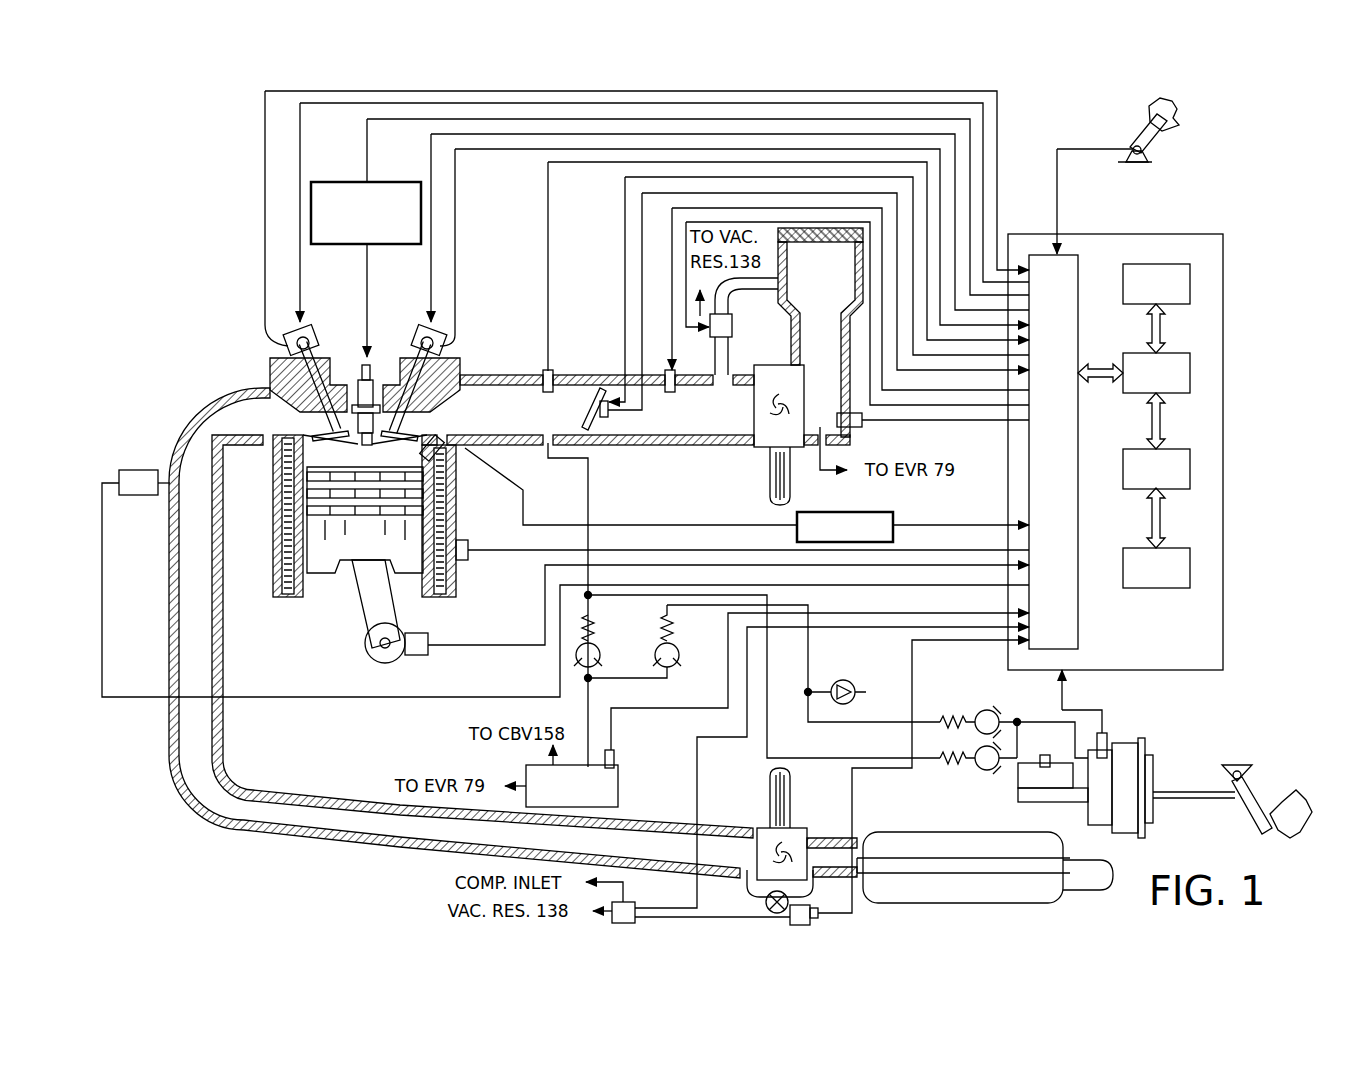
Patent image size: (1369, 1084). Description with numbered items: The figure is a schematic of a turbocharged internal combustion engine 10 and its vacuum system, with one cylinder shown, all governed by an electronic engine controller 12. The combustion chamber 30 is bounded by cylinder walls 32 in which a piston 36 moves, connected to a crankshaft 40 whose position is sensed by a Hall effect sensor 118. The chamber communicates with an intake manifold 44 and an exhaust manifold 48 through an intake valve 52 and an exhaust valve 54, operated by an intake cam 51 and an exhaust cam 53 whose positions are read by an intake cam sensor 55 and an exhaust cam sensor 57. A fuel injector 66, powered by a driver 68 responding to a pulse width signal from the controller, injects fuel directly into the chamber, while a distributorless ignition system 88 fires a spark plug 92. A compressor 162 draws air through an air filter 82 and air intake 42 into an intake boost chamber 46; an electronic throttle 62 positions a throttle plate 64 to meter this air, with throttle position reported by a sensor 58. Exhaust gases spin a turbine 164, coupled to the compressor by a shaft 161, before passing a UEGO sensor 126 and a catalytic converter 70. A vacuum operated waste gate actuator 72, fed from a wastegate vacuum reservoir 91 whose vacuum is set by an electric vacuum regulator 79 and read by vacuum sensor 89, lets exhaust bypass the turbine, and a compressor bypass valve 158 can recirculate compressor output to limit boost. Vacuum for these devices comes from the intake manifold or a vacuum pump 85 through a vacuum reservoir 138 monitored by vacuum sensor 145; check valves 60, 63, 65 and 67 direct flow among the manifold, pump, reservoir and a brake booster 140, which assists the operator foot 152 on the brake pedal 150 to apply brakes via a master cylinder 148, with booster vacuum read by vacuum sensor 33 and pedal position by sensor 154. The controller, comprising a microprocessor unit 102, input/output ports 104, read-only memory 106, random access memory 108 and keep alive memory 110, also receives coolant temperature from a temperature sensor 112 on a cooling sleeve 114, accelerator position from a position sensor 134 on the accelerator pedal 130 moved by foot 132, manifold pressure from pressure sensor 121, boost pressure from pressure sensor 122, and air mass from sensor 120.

The internal combustion engine 10 is at (206, 318).
The electronic engine controller 12 is at (1212, 236).
The combustion chamber 30 is at (362, 452).
The cylinder walls 32 is at (312, 583).
The vacuum sensor 33 is at (1107, 733).
The piston 36 is at (350, 547).
The crankshaft 40 is at (372, 664).
The air intake 42 is at (812, 339).
The intake manifold 44 is at (495, 421).
The intake boost chamber 46 is at (673, 421).
The exhaust manifold 48 is at (228, 427).
The intake cam 51 is at (425, 330).
The intake valve 52 is at (402, 424).
The exhaust cam 53 is at (305, 330).
The exhaust valve 54 is at (272, 392).
The intake cam sensor 55 is at (436, 344).
The exhaust cam sensor 57 is at (292, 344).
The throttle position sensor 58 is at (612, 415).
The check valve 60 is at (598, 648).
The electronic throttle 62 is at (592, 386).
The check valve 63 is at (681, 654).
The throttle plate 64 is at (600, 382).
The check valve 65 is at (996, 712).
The fuel injector 66 is at (440, 440).
The check valve 67 is at (976, 744).
The driver 68 is at (893, 535).
The catalytic converter 70 is at (895, 830).
The waste gate actuator 72 is at (766, 910).
The electric vacuum regulator 79 is at (633, 903).
The air filter 82 is at (843, 246).
The vacuum pump 85 is at (855, 683).
The distributorless ignition system 88 is at (326, 182).
The vacuum sensor 89 is at (812, 912).
The wastegate vacuum reservoir 91 is at (852, 926).
The spark plug 92 is at (370, 362).
The microprocessor unit 102 is at (1193, 375).
The input/output ports 104 is at (1082, 262).
The read-only memory 106 is at (1193, 282).
The random access memory 108 is at (1193, 470).
The keep alive memory 110 is at (1193, 562).
The temperature sensor 112 is at (468, 542).
The cooling sleeve 114 is at (453, 590).
The Hall effect sensor 118 is at (412, 656).
The air mass sensor 120 is at (860, 425).
The pressure sensor 121 is at (545, 372).
The pressure sensor 122 is at (667, 375).
The UEGO sensor 126 is at (119, 472).
The accelerator pedal 130 is at (1120, 126).
The foot 132 is at (1172, 116).
The position sensor 134 is at (1160, 152).
The vacuum reservoir 138 is at (620, 797).
The brake booster 140 is at (1127, 746).
The vacuum sensor 145 is at (615, 757).
The master cylinder 148 is at (1018, 773).
The brake pedal 150 is at (1265, 824).
The operator foot 152 is at (1308, 798).
The position sensor 154 is at (1225, 771).
The compressor bypass valve 158 is at (732, 326).
The shaft 161 is at (769, 472).
The compressor 162 is at (783, 365).
The turbine 164 is at (757, 830).